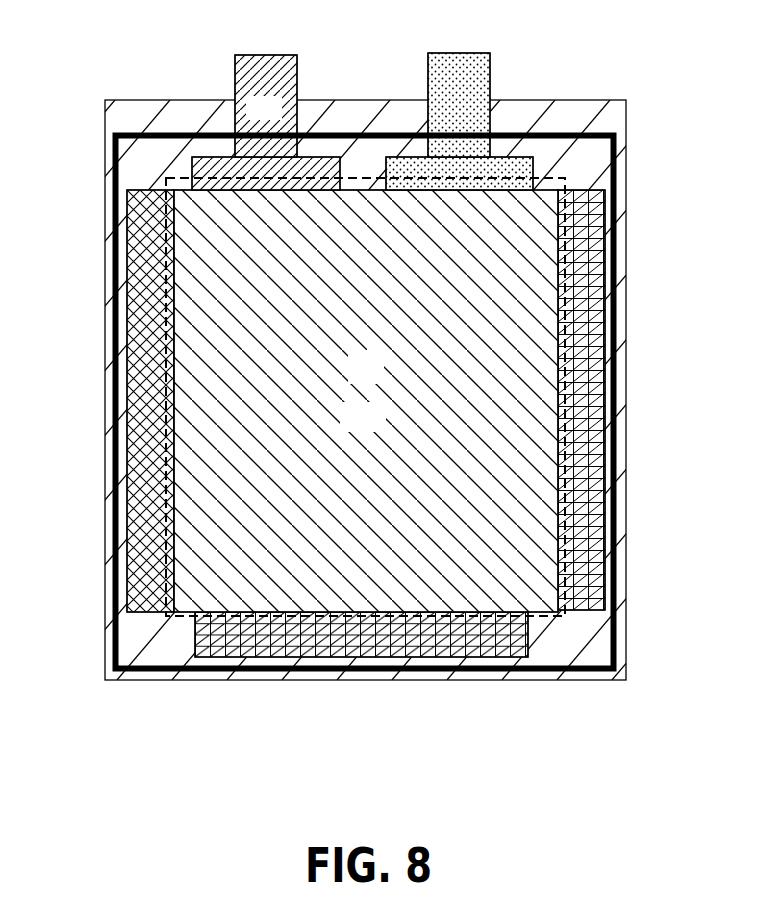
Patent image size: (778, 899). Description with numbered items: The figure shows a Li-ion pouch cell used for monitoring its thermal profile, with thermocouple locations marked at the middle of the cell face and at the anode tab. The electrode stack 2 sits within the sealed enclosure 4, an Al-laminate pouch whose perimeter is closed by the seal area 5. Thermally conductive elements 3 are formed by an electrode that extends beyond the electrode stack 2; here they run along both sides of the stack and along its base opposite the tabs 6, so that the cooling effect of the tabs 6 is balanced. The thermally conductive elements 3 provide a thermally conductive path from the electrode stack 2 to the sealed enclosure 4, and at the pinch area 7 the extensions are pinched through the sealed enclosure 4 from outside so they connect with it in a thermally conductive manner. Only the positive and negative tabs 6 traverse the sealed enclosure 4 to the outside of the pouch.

The electrode stack 2 is at (373, 378).
The thermally conductive element 3 is at (138, 397).
The sealed enclosure 4 is at (612, 101).
The seal area 5 is at (628, 336).
The tab 6 is at (449, 74).
The pinch area 7 is at (92, 629).